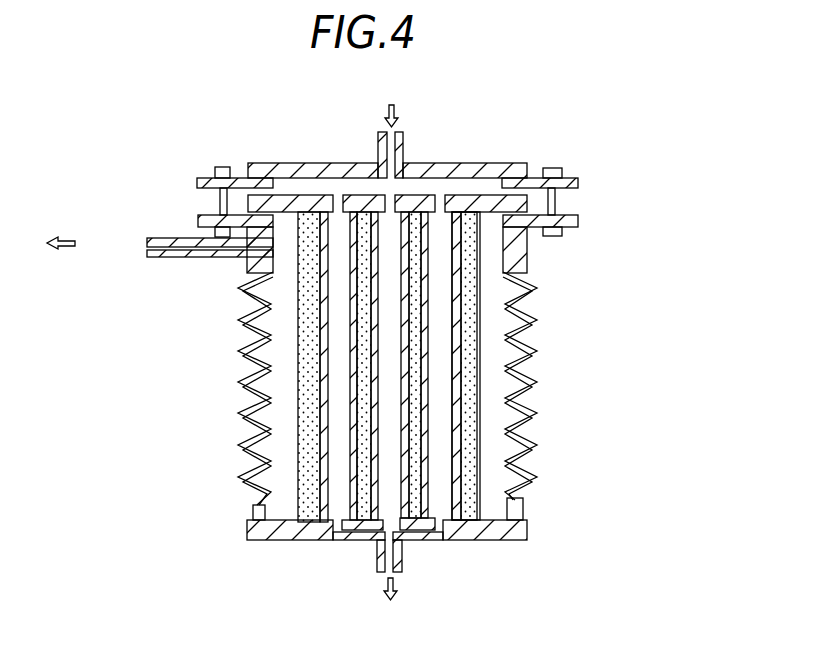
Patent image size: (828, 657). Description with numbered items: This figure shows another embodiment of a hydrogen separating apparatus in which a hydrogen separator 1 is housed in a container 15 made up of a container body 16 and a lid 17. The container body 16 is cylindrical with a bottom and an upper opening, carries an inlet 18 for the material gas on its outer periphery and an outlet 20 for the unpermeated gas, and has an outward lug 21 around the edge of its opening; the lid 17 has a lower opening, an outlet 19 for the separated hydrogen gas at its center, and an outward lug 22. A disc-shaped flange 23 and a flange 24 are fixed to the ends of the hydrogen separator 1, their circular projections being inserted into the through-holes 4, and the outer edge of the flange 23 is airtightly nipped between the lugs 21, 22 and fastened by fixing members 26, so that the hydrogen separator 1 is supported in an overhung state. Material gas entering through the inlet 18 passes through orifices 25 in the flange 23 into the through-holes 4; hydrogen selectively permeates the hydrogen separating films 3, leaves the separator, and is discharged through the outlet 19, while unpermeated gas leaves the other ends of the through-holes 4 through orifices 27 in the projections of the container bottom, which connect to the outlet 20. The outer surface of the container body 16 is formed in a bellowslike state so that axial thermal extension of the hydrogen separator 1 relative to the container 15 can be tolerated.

The hydrogen separator 1 is at (518, 366).
The hydrogen separating film 3 is at (460, 308).
The through-hole 4 is at (443, 463).
The container 15 is at (602, 88).
The container body 16 is at (527, 252).
The lid 17 is at (514, 160).
The inlet 18 is at (403, 134).
The outlet 19 is at (173, 258).
The outlet 20 is at (402, 545).
The outward lug 21 is at (578, 222).
The outward lug 22 is at (578, 178).
The flange 23 is at (527, 200).
The flange 24 is at (528, 523).
The orifice 25 is at (340, 198).
The fixing member 26 is at (225, 165).
The orifice 27 is at (333, 537).